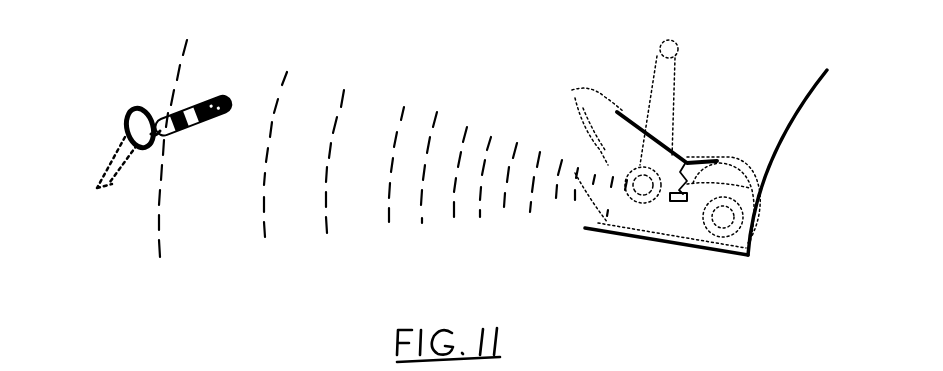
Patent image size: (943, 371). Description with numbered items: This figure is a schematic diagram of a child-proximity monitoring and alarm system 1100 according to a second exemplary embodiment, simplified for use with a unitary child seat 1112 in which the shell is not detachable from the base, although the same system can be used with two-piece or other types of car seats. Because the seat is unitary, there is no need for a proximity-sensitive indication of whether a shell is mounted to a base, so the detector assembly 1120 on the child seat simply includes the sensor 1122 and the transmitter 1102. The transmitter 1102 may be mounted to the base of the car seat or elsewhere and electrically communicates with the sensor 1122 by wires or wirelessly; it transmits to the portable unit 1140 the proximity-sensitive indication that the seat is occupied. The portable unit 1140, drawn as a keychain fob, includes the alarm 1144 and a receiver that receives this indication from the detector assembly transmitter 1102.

The child-proximity monitoring and alarm system 1100 is at (701, 131).
The transmitter 1102 is at (707, 232).
The unitary child seat 1112 is at (534, 99).
The detector assembly 1120 is at (700, 141).
The sensor 1122 is at (647, 104).
The portable unit 1140 is at (153, 111).
The alarm 1144 is at (200, 161).